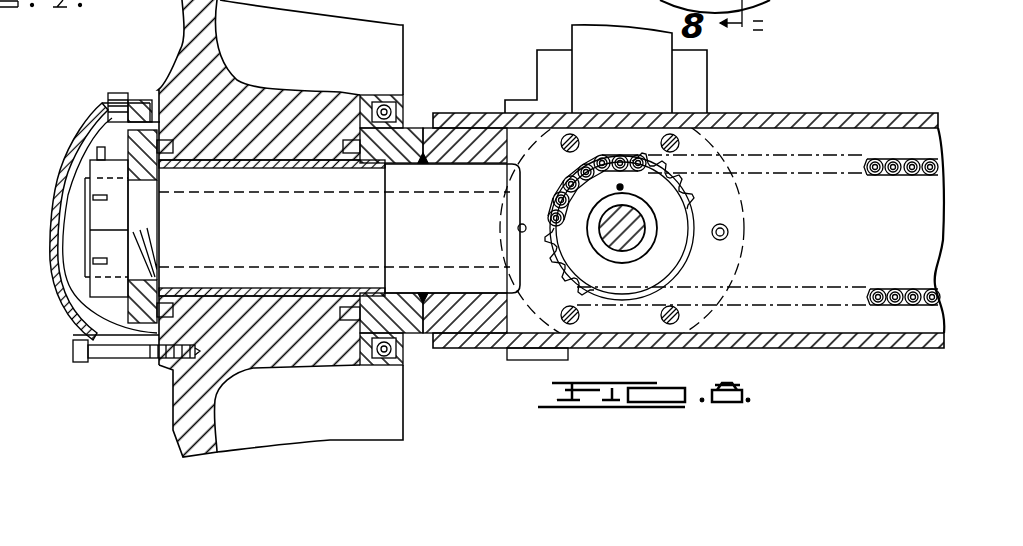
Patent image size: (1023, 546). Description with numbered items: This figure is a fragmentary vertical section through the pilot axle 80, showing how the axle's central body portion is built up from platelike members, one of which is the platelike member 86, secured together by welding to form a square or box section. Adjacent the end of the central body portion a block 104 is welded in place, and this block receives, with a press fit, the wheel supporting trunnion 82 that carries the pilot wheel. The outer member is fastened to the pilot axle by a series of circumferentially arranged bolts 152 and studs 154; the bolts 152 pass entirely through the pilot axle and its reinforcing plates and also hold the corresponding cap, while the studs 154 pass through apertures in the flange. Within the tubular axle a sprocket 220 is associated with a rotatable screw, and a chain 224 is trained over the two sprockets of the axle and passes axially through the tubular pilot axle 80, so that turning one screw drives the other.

The pilot axle 80 is at (793, 124).
The wheel supporting trunnion 82 is at (437, 173).
The platelike member 86 is at (803, 0).
The block 104 is at (468, 323).
The bolt 152 is at (583, 140).
The stud 154 is at (728, 232).
The sprocket 220 is at (678, 192).
The chain 224 is at (925, 160).